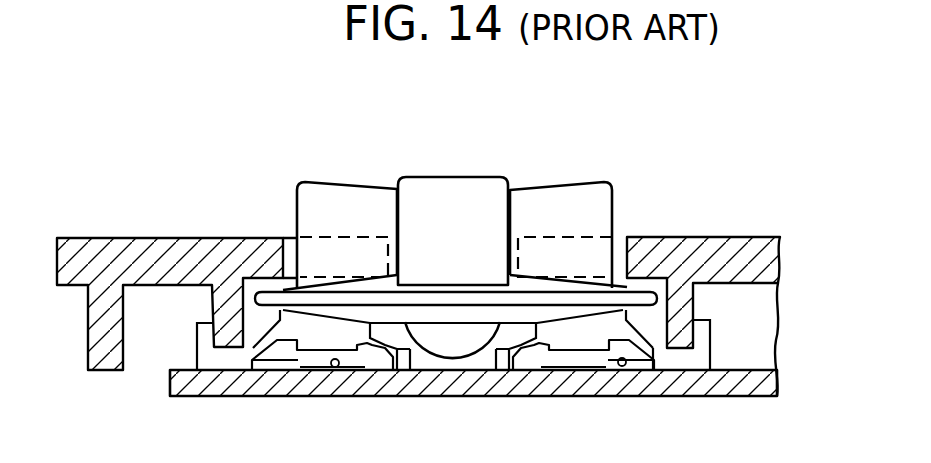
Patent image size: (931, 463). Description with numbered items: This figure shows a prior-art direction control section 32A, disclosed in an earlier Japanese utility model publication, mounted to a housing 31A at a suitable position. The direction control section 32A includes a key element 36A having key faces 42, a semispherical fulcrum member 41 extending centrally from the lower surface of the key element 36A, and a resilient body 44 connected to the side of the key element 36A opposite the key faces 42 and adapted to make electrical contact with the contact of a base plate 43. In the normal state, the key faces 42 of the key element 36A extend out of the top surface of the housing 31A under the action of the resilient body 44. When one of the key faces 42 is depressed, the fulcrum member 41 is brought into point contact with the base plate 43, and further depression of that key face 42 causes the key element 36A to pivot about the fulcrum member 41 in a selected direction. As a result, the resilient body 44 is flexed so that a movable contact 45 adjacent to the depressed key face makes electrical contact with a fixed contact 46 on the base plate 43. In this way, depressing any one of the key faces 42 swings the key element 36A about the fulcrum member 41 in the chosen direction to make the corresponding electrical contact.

The housing 31A is at (738, 238).
The direction control section 32A is at (491, 177).
The key element 36A is at (572, 165).
The fulcrum member 41 is at (444, 352).
The key faces 42 is at (330, 188).
The base plate 43 is at (760, 380).
The resilient body 44 is at (678, 360).
The movable contact 45 is at (302, 368).
The fixed contact 46 is at (330, 367).